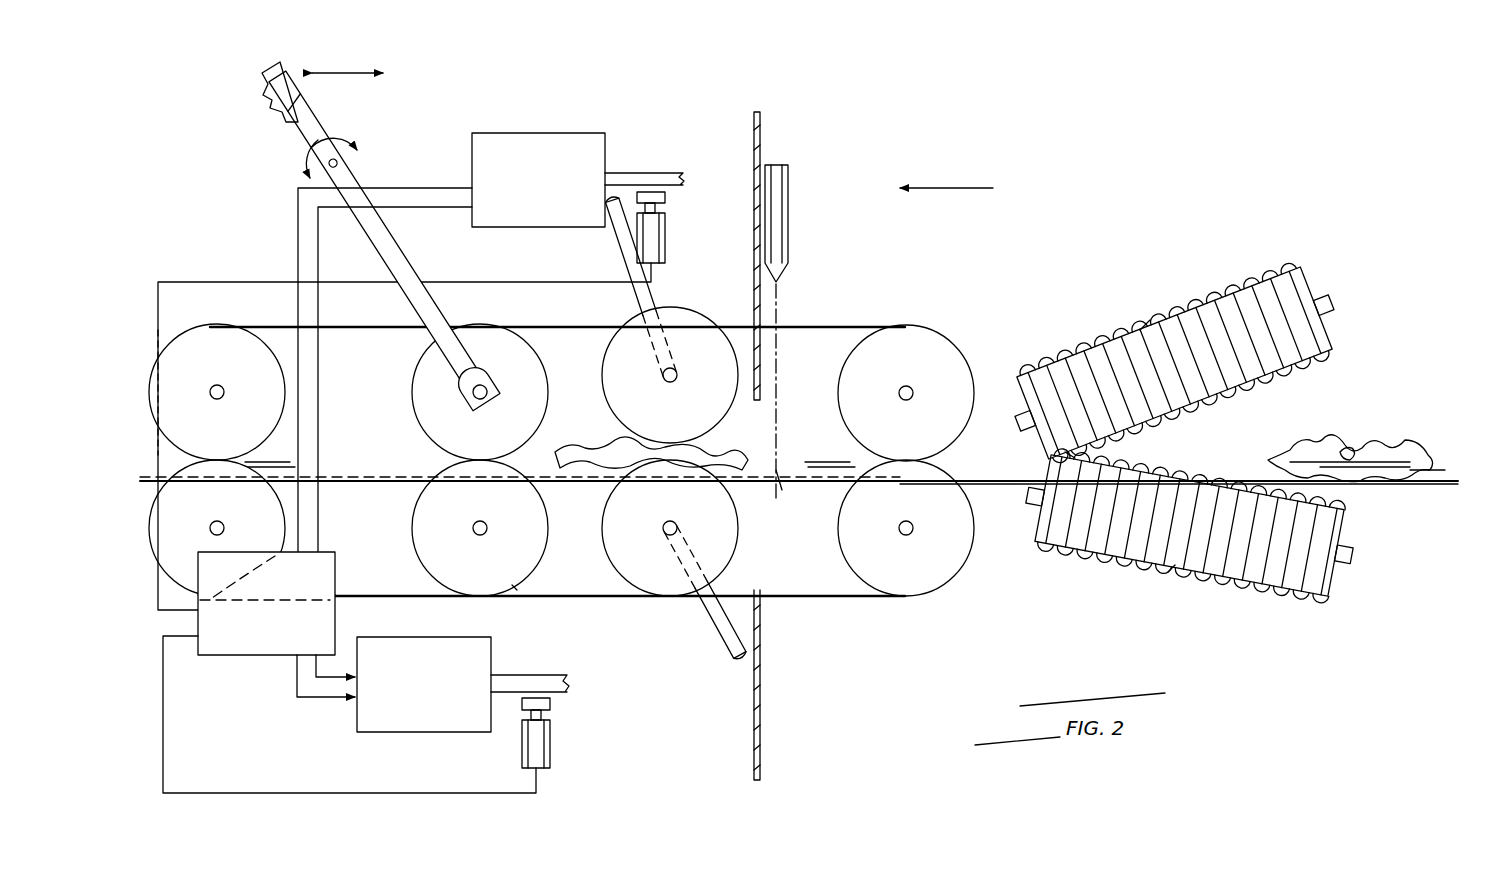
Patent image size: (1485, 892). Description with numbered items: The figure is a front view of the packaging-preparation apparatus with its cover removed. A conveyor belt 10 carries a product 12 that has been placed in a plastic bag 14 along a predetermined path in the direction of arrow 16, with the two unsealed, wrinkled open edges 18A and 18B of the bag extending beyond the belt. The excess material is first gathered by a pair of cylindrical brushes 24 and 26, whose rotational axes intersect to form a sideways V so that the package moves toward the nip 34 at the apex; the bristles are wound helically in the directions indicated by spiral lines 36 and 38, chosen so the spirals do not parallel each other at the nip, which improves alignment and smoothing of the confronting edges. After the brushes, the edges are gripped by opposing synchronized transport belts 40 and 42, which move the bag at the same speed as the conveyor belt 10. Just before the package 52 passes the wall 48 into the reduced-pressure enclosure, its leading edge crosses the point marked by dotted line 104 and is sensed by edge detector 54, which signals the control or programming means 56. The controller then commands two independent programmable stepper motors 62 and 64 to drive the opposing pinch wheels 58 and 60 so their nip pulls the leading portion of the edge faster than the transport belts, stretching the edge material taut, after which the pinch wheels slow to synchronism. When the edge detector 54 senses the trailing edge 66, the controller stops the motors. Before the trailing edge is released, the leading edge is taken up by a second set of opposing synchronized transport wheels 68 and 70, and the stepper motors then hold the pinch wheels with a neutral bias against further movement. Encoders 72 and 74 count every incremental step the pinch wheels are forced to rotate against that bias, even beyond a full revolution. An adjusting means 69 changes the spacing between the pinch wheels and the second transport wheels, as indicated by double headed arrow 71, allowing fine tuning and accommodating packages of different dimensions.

The conveyor belt 10 is at (345, 478).
The product 12 is at (1362, 450).
The plastic bag 14 is at (1440, 470).
The arrow 16 is at (950, 188).
The edge 18A is at (1410, 460).
The edge 18B is at (1415, 483).
The cylindrical brush 24 is at (1225, 300).
The cylindrical brush 26 is at (1255, 582).
The nip 34 is at (1072, 455).
The spiral line 36 is at (1152, 325).
The spiral line 38 is at (1170, 570).
The transport belt 40 is at (248, 282).
The transport belt 42 is at (270, 480).
The wall 48 is at (768, 132).
The package 52 is at (766, 487).
The edge detector 54 is at (792, 200).
The control or programming means 56 is at (266, 603).
The pinch wheel 58 is at (603, 346).
The pinch wheel 60 is at (680, 596).
The stepper motor 62 is at (491, 342).
The stepper motor 64 is at (433, 684).
The trailing edge 66 is at (740, 456).
The transport wheel 68 is at (415, 382).
The adjusting means 69 is at (265, 93).
The transport wheel 70 is at (512, 585).
The double headed arrow 71 is at (350, 74).
The encoder 72 is at (632, 240).
The encoder 74 is at (552, 752).
The dotted line 104 is at (788, 300).